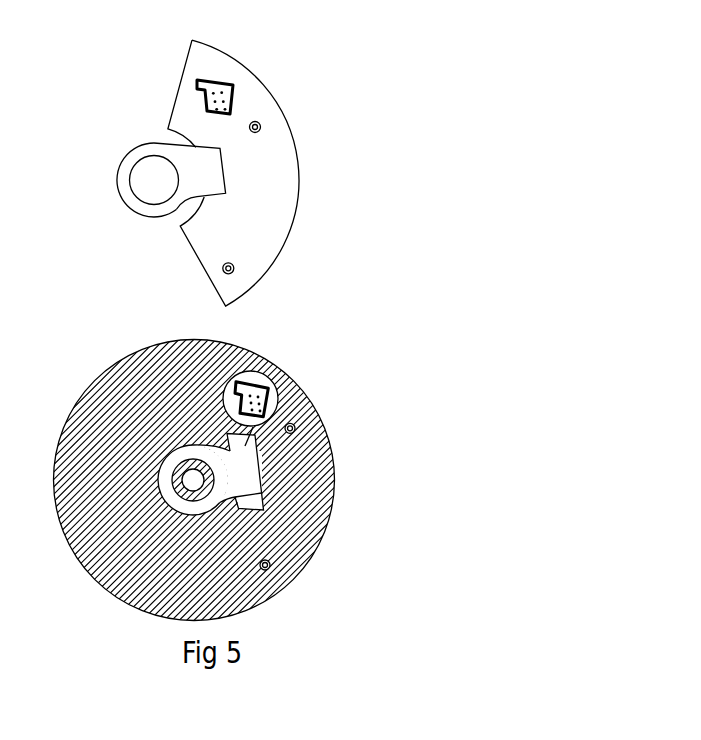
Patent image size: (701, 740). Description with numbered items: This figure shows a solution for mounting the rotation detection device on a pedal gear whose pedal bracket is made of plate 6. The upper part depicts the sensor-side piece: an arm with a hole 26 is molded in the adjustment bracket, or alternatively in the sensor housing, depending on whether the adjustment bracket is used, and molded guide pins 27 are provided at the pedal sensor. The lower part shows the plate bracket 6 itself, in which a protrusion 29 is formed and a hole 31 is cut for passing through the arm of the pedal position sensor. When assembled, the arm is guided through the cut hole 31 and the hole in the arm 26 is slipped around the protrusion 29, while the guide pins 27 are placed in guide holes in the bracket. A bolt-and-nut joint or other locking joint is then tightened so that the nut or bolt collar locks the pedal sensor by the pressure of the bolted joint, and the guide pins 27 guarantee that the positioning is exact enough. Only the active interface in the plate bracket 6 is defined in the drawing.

The plate bracket 6 is at (90, 553).
The arm with a hole 26 is at (138, 145).
The molded guide pins 27 is at (233, 262).
The protrusion 29 is at (212, 495).
The hole 31 is at (278, 393).